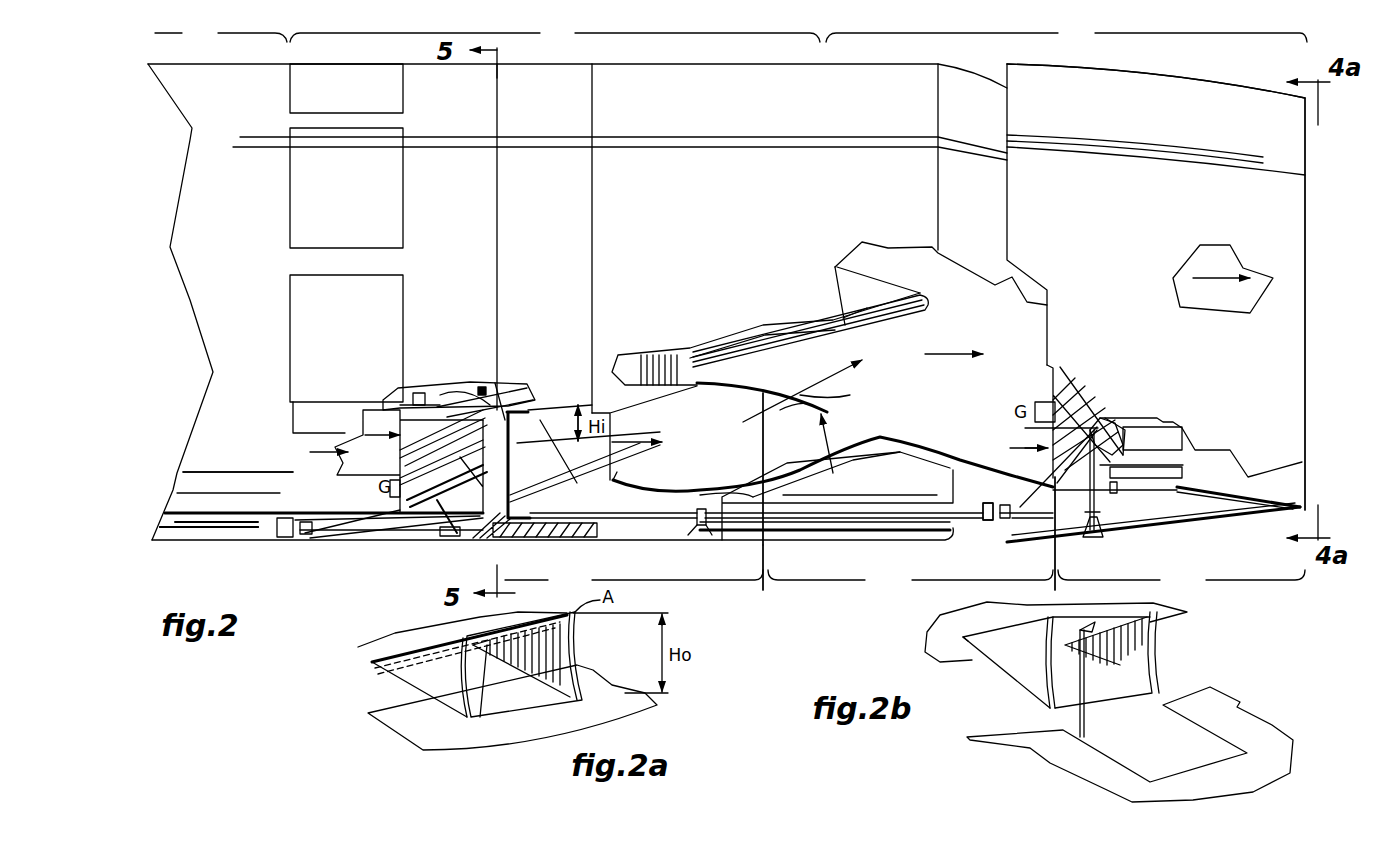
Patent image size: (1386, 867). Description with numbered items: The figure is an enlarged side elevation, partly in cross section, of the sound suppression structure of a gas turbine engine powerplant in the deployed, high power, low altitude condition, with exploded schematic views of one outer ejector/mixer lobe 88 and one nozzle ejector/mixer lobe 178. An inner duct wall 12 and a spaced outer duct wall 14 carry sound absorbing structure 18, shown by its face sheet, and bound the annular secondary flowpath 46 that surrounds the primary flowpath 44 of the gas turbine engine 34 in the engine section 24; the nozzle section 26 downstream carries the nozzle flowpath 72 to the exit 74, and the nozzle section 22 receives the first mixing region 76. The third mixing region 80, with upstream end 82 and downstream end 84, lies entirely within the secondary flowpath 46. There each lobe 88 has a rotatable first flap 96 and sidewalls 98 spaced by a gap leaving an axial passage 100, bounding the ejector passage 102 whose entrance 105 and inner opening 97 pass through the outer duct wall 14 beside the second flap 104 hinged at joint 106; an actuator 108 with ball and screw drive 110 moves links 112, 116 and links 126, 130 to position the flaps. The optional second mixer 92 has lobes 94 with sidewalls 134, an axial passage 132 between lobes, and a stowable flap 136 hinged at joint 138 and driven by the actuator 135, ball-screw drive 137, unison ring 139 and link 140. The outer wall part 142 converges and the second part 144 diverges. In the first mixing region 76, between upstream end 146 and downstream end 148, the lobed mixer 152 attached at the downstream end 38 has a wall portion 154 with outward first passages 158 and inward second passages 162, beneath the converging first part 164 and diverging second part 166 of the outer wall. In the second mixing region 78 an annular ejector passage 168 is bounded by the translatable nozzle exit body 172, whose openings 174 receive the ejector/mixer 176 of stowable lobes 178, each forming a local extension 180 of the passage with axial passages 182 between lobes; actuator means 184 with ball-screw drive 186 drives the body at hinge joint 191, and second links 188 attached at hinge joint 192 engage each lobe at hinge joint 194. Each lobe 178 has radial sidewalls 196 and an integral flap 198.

In FIG. 2, the inner duct wall 12 is at (645, 420).
In FIG. 2A, the outer duct wall 14 is at (560, 723).
In FIG. 2, the sound absorbing structure 18 is at (905, 320).
In FIG. 2, the nozzle section 22 is at (221, 33).
In FIG. 2, the gas turbine engine section 24 is at (555, 33).
In FIG. 2, the nozzle section 26 is at (1066, 33).
In FIG. 2, the gas turbine engine 34 is at (875, 255).
In FIG. 2, the downstream end 38 is at (905, 268).
In FIG. 2, the primary flowpath 44 is at (860, 392).
In FIG. 2, the secondary flowpath 46 is at (335, 447).
In FIG. 2, the nozzle flowpath 72 is at (1222, 278).
In FIG. 2, the exit 74 is at (1305, 478).
In FIG. 2, the first mixing region 76 is at (910, 581).
In FIG. 2, the second mixing region 78 is at (1181, 580).
In FIG. 2, the third mixing region 80 is at (634, 579).
In FIG. 2, the upstream end 82 is at (397, 567).
In FIG. 2, the downstream end 84 is at (760, 548).
In FIG. 2A, the ejector/mixer lobe 88 is at (415, 703).
In FIG. 2, the second mixer 92 is at (488, 390).
In FIG. 2, the mixer lobe 94 is at (500, 400).
In FIG. 2, the first flap 96 is at (415, 455).
In FIG. 2A, the first flap 96 is at (487, 642).
In FIG. 2, the inner opening 97 is at (510, 515).
In FIG. 2A, the sidewall 98 is at (558, 650).
In FIG. 2, the axial passage 100 is at (376, 430).
In FIG. 2, the ejector passage 102 is at (512, 470).
In FIG. 2, the second flap 104 is at (318, 540).
In FIG. 2, the entrance 105 is at (397, 540).
In FIG. 2, the hinged joint 106 is at (290, 540).
In FIG. 2, the actuator 108 is at (258, 537).
In FIG. 2, the ball and screw drive 110 is at (278, 512).
In FIG. 2, the link 112 is at (325, 525).
In FIG. 2, the second link 116 is at (350, 525).
In FIG. 2, the first link 126 is at (452, 538).
In FIG. 2, the second link 130 is at (465, 530).
In FIG. 2A, the second link 130 is at (490, 702).
In FIG. 2, the second axially extending passage 132 is at (528, 410).
In FIG. 2, the sidewall 134 is at (510, 440).
In FIG. 2, the actuator 135 is at (395, 380).
In FIG. 2, the stowable flap 136 is at (470, 395).
In FIG. 2, the ball-screw drive 137 is at (413, 393).
In FIG. 2, the hinge joint 138 is at (419, 393).
In FIG. 2, the unison ring 139 is at (505, 382).
In FIG. 2, the link 140 is at (480, 387).
In FIG. 2, the part of outer duct wall 142 is at (613, 468).
In FIG. 2, the second part 144 is at (722, 493).
In FIG. 2, the upstream end 146 is at (763, 590).
In FIG. 2, the downstream end 148 is at (1060, 547).
In FIG. 2, the lobed mixer 152 is at (835, 453).
In FIG. 2, the wall portion 154 is at (845, 388).
In FIG. 2, the first passages 158 is at (809, 381).
In FIG. 2, the second passages 162 is at (800, 400).
In FIG. 2, the first part 164 is at (790, 475).
In FIG. 2, the second part 166 is at (880, 440).
In FIG. 2, the annular ejector passage 168 is at (1085, 435).
In FIG. 2B, the annular ejector passage 168 is at (990, 710).
In FIG. 2, the nozzle exit body 172 is at (1230, 79).
In FIG. 2B, the nozzle exit body 172 is at (1215, 712).
In FIG. 2, the openings 174 is at (1172, 450).
In FIG. 2, the ejector/mixer 176 is at (1010, 450).
In FIG. 2B, the stowable ejector/mixer lobe 178 is at (1168, 646).
In FIG. 2, the local extension 180 is at (1130, 432).
In FIG. 2B, the local extension 180 is at (1137, 677).
In FIG. 2, the axial passages 182 is at (1150, 433).
In FIG. 2, the actuator means 184 is at (972, 497).
In FIG. 2, the ball-screw drive 186 is at (1000, 525).
In FIG. 2, the second link 188 is at (1118, 492).
In FIG. 2B, the second link 188 is at (1077, 700).
In FIG. 2, the hinge joint 191 is at (1097, 512).
In FIG. 2, the hinge joint 192 is at (1110, 535).
In FIG. 2, the hinge joint 194 is at (1115, 420).
In FIG. 2B, the hinge joint 194 is at (1050, 630).
In FIG. 2B, the sidewalls 196 is at (1008, 650).
In FIG. 2B, the flap 198 is at (1105, 625).